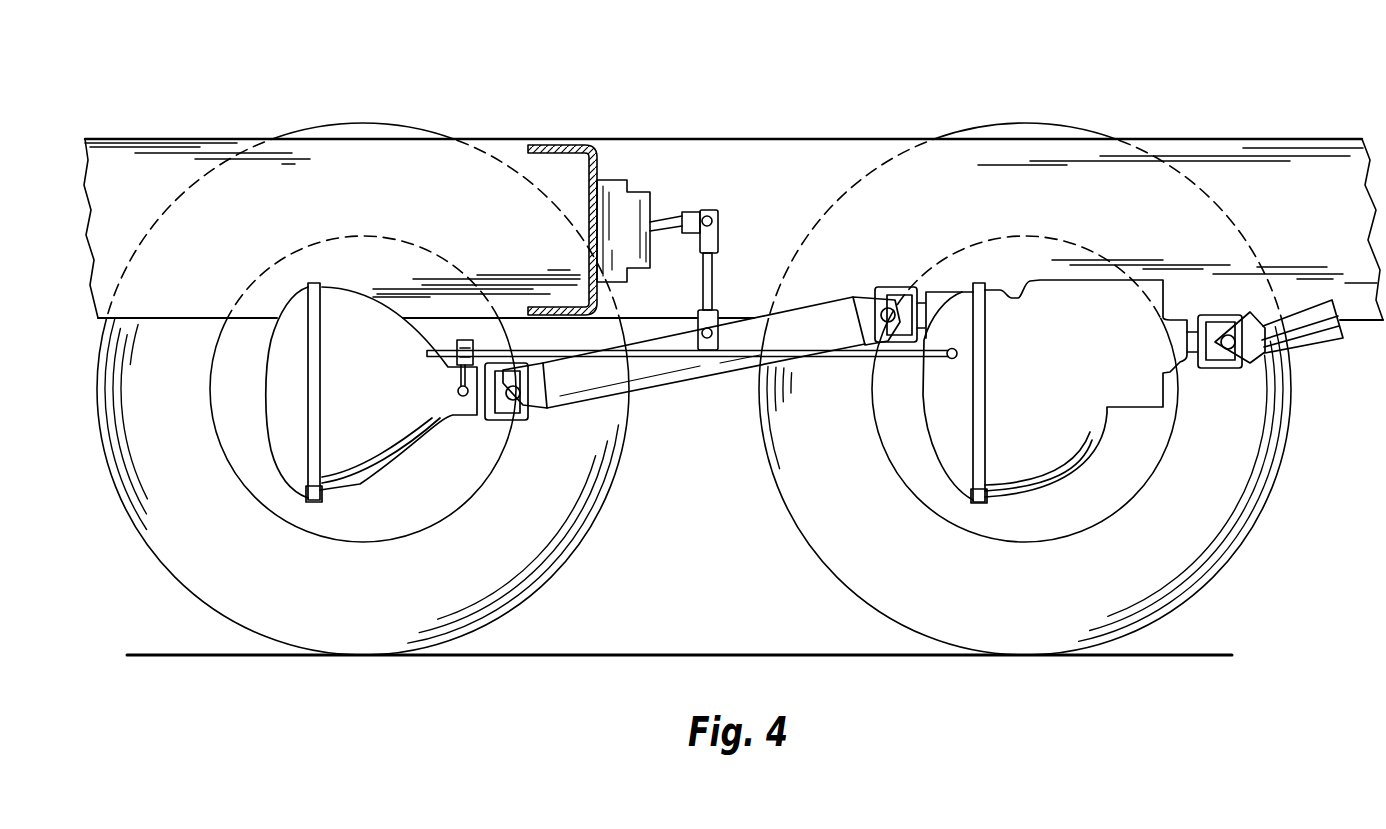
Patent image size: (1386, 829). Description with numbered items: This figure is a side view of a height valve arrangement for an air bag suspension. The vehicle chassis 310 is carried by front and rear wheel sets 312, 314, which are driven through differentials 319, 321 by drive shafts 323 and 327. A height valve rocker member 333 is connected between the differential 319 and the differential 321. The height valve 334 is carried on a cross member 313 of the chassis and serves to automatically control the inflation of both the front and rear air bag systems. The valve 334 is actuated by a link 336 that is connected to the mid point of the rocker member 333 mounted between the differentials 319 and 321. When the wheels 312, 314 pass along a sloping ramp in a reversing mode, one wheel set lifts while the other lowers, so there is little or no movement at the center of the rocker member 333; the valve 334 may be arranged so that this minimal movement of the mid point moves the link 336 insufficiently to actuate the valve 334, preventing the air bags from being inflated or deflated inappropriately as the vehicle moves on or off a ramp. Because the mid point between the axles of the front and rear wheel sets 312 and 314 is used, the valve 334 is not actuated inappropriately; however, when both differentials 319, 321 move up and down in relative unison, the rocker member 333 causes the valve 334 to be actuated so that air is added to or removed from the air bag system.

The vehicle chassis 310 is at (803, 140).
The front wheel set 312 is at (1028, 604).
The cross member 313 is at (597, 152).
The rear wheel set 314 is at (368, 604).
The differential 319 is at (1040, 394).
The differential 321 is at (374, 405).
The drive shaft 323 is at (1300, 335).
The drive shaft 327 is at (604, 378).
The height valve rocker member 333 is at (654, 352).
The height valve 334 is at (627, 207).
The link 336 is at (718, 270).